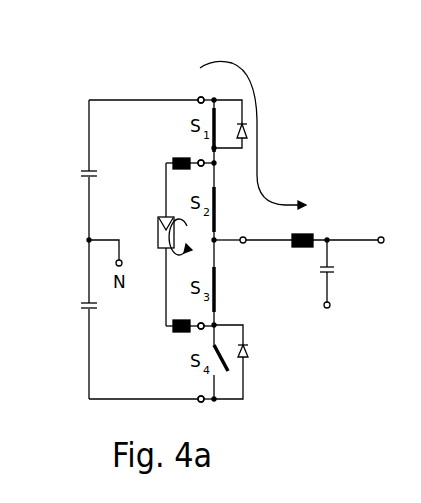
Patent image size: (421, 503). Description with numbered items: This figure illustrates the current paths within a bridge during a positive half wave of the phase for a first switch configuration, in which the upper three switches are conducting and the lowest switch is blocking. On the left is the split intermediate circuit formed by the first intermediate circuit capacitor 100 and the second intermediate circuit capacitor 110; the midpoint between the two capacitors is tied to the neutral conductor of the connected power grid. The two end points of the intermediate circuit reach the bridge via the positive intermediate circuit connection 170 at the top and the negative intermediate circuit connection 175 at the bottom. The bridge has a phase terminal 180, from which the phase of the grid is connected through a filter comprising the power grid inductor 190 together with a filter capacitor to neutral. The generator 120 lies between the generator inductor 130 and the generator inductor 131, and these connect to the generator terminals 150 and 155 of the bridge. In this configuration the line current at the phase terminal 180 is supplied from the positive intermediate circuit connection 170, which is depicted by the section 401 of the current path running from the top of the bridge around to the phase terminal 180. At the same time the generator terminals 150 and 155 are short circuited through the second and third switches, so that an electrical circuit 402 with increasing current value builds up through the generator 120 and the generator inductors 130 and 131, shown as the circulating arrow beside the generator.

The first intermediate circuit capacitor 100 is at (85, 170).
The second intermediate circuit capacitor 110 is at (82, 302).
The generator 120 is at (160, 217).
The generator inductor 130 is at (177, 159).
The generator inductor 131 is at (173, 328).
The generator terminal 150 is at (204, 167).
The generator terminal 155 is at (206, 323).
The positive intermediate circuit connection 170 is at (199, 98).
The negative intermediate circuit connection 175 is at (204, 401).
The phase terminal 180 is at (246, 243).
The power grid inductor 190 is at (312, 235).
The section of the current path 401 is at (240, 68).
The electrical circuit 402 is at (184, 254).